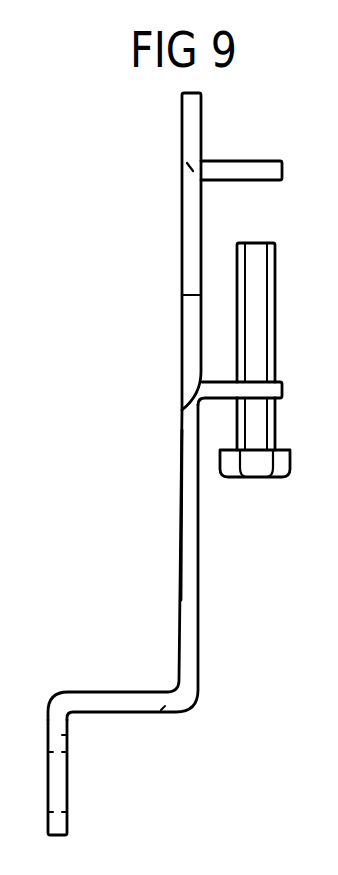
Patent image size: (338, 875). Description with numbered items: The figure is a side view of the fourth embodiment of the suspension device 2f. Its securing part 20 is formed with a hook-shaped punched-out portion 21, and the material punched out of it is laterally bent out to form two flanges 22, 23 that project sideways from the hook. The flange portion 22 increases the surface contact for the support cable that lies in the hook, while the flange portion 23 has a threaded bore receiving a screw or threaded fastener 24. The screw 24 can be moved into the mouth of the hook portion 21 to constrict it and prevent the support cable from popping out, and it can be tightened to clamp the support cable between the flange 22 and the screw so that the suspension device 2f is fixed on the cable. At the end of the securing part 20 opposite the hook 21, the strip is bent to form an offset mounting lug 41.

The securing part 20 is at (190, 590).
The hook-shaped punched-out portion 21 is at (185, 208).
The flange portion 22 is at (240, 170).
The flange portion 23 is at (273, 389).
The screw 24 is at (263, 300).
The suspension device 2f is at (172, 517).
The offset mounting lug 41 is at (65, 735).